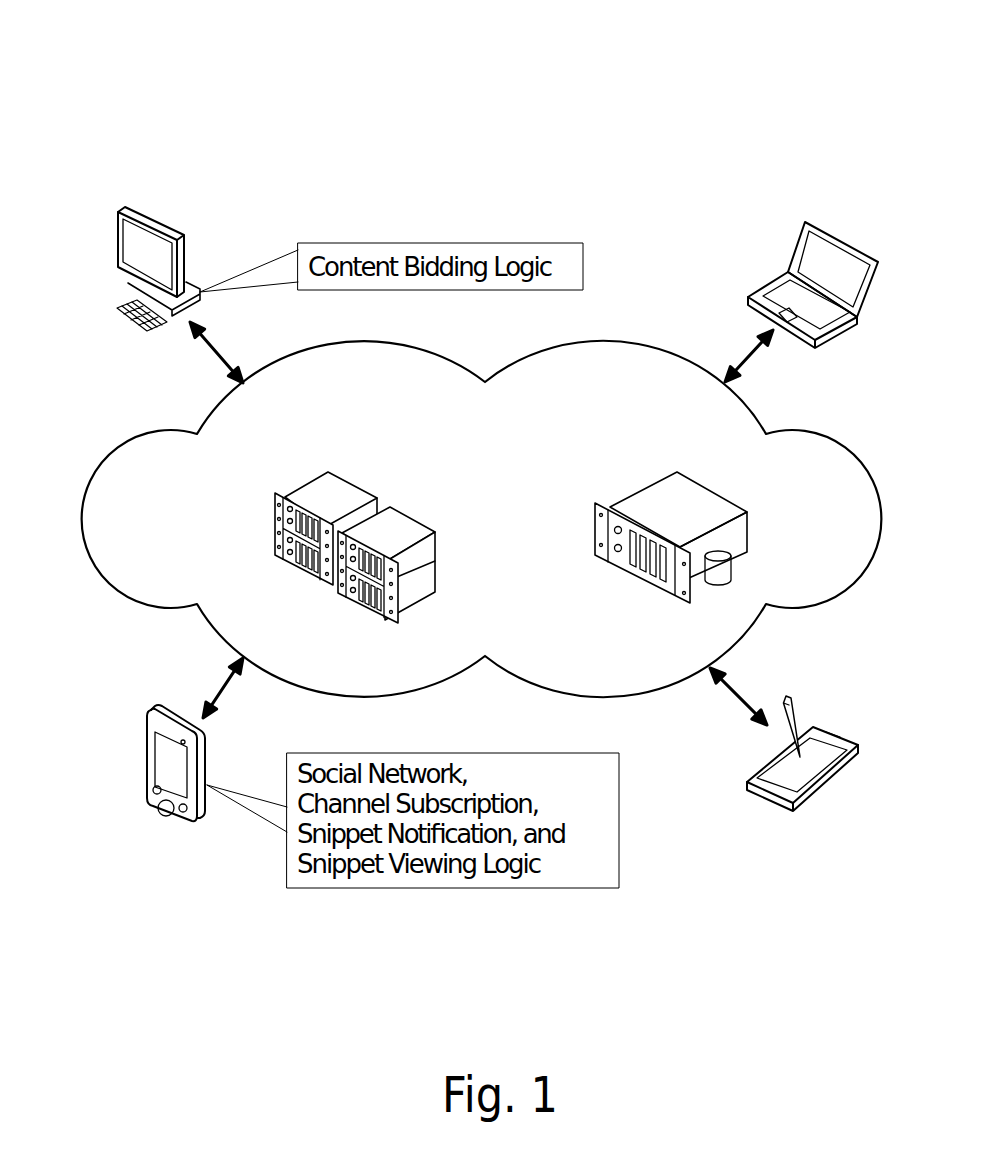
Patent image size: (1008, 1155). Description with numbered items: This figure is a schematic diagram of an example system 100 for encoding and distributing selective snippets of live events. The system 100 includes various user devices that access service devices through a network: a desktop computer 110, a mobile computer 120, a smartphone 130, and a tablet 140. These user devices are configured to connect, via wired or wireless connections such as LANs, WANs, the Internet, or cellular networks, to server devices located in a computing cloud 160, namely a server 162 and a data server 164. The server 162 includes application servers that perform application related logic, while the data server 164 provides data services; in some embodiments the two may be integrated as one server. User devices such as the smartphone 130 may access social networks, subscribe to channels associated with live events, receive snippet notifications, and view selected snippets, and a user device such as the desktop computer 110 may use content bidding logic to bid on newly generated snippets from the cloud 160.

The system 100 is at (351, 44).
The desktop computer 110 is at (117, 251).
The mobile computer 120 is at (753, 288).
The smartphone 130 is at (143, 731).
The tablet 140 is at (746, 796).
The computing cloud 160 is at (508, 476).
The server 162 is at (282, 553).
The data server 164 is at (598, 538).